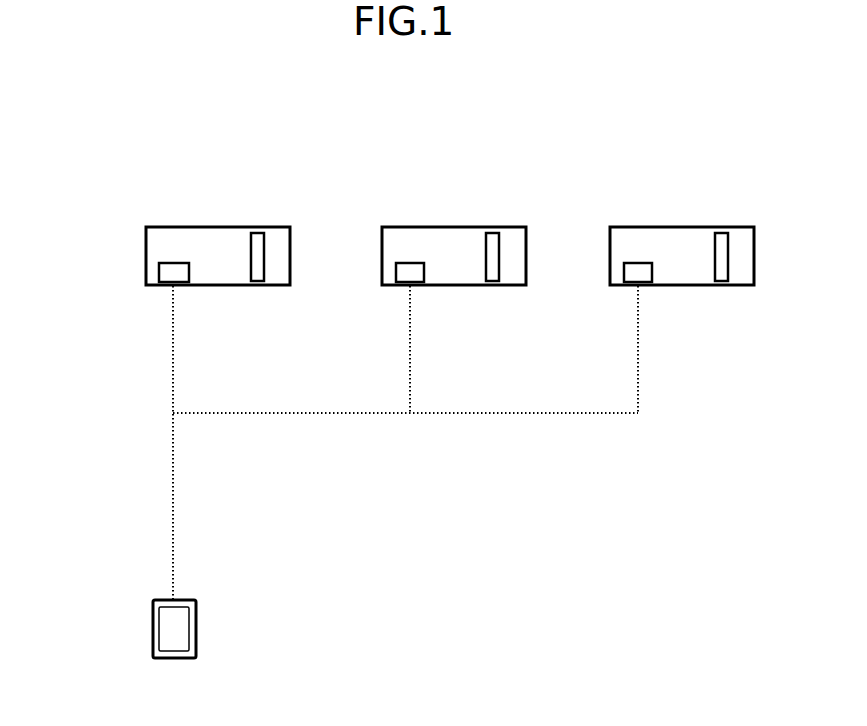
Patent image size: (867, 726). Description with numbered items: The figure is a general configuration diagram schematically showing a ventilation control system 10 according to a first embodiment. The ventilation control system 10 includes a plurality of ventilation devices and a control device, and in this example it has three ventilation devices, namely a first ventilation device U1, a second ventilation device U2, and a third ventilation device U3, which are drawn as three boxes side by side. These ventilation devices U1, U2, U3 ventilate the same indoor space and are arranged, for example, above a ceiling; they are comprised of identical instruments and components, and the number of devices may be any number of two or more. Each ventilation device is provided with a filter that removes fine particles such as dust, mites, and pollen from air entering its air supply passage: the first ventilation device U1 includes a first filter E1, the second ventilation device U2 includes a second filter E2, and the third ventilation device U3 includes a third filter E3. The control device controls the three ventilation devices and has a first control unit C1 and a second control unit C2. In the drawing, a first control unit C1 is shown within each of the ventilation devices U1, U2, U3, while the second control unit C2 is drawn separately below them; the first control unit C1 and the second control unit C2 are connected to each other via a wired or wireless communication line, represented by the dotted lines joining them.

The ventilation control system 10 is at (70, 173).
The first ventilation device U1 is at (173, 227).
The second ventilation device U2 is at (413, 227).
The third ventilation device U3 is at (662, 227).
The first filter E1 is at (257, 233).
The second filter E2 is at (491, 233).
The third filter E3 is at (720, 233).
The first control unit C1 is at (188, 283).
The second control unit C2 is at (153, 632).